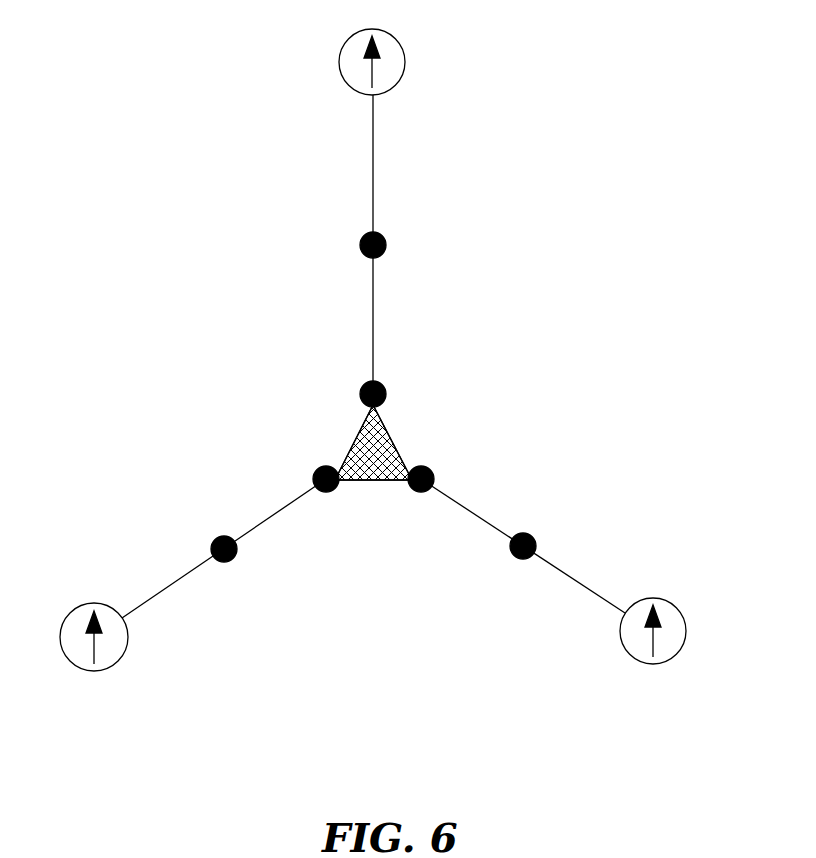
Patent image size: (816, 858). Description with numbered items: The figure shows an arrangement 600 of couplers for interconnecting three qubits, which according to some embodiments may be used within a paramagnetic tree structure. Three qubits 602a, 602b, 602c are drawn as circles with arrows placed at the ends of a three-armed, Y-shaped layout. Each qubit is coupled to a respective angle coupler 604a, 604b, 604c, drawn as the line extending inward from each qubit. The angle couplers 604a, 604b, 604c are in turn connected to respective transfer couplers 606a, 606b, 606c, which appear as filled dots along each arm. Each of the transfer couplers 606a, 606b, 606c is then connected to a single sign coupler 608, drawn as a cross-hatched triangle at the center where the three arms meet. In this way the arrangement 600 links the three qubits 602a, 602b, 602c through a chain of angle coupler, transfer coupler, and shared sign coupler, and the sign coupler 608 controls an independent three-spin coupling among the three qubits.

The arrangement of couplers 600 is at (207, 78).
The qubit 602a is at (403, 52).
The qubit 602b is at (667, 664).
The qubit 602c is at (78, 668).
The angle coupler 604a is at (373, 132).
The angle coupler 604b is at (570, 575).
The angle coupler 604c is at (173, 587).
The transfer coupler 606a is at (373, 282).
The transfer coupler 606b is at (478, 517).
The transfer coupler 606c is at (283, 503).
The sign coupler 608 is at (398, 425).